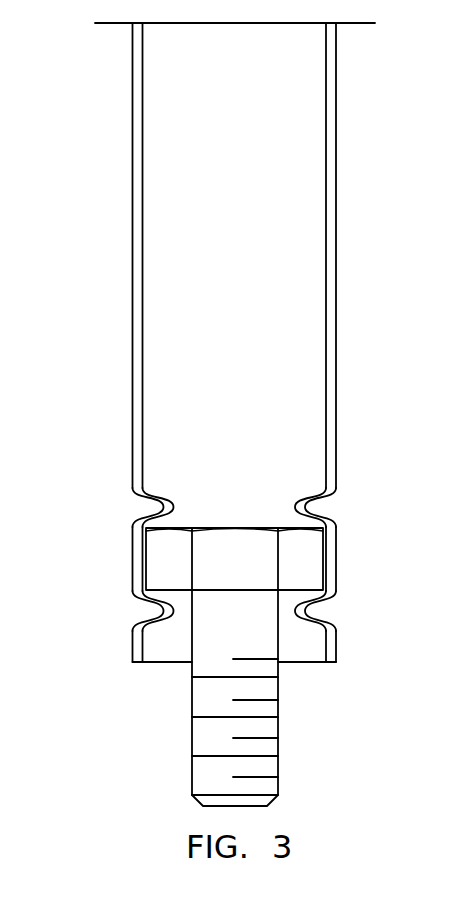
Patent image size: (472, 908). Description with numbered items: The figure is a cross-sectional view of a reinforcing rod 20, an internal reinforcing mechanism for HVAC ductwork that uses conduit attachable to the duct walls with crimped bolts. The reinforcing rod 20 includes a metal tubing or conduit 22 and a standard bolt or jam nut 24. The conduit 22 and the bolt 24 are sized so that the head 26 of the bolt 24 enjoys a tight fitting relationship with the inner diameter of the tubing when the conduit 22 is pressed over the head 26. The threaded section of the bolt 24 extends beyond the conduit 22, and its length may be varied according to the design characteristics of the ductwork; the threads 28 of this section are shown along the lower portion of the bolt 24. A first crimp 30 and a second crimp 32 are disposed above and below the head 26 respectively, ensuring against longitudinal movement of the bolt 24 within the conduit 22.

The reinforcing rod 20 is at (223, 414).
The conduit 22 is at (337, 207).
The bolt 24 is at (226, 667).
The head 26 is at (236, 543).
The threads 28 is at (280, 691).
The first crimp 30 is at (300, 508).
The second crimp 32 is at (305, 597).